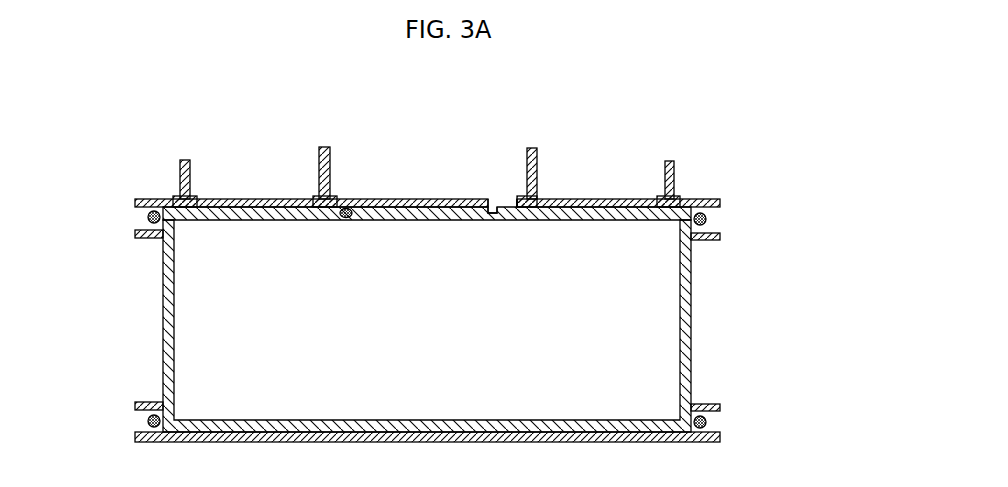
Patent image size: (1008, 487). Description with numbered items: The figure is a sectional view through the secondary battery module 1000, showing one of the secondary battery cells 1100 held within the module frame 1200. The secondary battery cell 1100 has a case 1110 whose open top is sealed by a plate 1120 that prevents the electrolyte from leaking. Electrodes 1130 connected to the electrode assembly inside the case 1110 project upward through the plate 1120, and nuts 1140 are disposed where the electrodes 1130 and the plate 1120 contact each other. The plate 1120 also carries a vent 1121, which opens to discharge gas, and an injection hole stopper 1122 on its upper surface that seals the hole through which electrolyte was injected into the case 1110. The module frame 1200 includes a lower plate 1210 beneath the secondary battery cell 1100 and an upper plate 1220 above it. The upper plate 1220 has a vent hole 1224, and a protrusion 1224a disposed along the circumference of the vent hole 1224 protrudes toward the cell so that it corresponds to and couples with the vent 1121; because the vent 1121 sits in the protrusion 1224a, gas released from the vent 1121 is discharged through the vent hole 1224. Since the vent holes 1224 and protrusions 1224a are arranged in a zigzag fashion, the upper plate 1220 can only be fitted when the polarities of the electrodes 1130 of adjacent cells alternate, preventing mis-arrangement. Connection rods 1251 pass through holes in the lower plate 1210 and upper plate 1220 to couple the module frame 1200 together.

The secondary battery module 1000 is at (82, 108).
The secondary battery cell 1100 is at (803, 155).
The case 1110 is at (692, 273).
The plate 1120 is at (702, 214).
The vent 1121 is at (509, 228).
The injection hole stopper 1122 is at (348, 228).
The electrode 1130 is at (672, 177).
The nut 1140 is at (678, 198).
The module frame 1200 is at (120, 184).
The lower plate 1210 is at (135, 436).
The upper plate 1220 is at (135, 203).
The vent hole 1224 is at (500, 205).
The protrusion 1224a is at (509, 203).
The connection rod 1251 is at (147, 217).